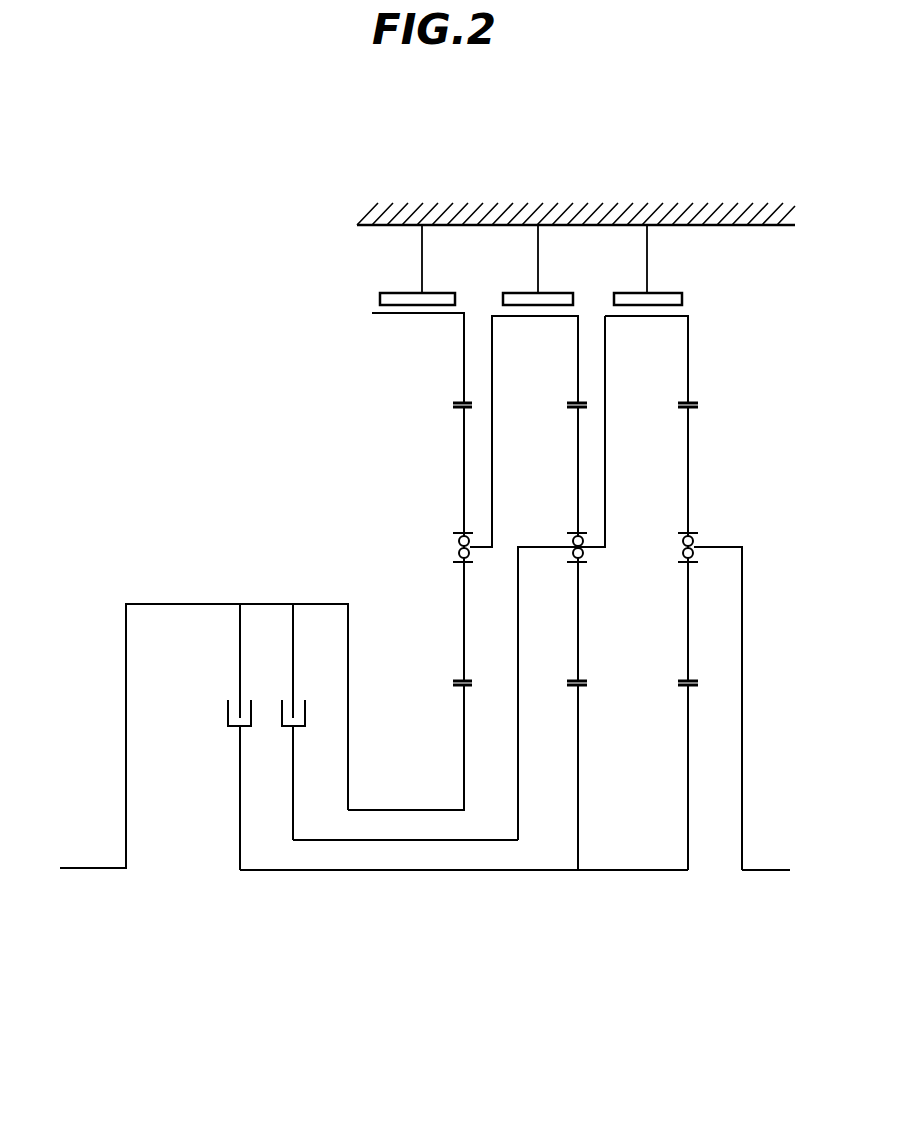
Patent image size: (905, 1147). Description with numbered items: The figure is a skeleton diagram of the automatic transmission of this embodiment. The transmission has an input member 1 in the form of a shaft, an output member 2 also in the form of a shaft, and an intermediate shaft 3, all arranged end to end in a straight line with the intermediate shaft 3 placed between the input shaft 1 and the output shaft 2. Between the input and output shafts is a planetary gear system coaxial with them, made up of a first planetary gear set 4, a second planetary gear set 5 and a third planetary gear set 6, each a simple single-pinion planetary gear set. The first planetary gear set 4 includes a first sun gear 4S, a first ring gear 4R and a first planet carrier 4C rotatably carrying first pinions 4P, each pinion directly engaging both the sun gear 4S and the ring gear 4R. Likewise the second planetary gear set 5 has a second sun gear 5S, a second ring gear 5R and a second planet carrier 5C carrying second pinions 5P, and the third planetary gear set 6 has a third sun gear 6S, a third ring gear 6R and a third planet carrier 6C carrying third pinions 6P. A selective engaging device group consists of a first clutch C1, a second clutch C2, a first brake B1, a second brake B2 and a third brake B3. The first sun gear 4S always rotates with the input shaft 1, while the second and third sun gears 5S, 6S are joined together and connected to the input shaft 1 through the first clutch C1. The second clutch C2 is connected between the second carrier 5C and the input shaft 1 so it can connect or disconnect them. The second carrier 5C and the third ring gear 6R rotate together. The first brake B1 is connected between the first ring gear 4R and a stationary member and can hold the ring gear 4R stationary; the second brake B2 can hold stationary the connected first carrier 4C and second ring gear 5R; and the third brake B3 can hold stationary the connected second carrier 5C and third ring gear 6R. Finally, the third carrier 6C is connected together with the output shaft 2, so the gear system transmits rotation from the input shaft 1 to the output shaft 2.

The input member 1 is at (117, 870).
The output member 2 is at (760, 872).
The intermediate shaft 3 is at (547, 878).
The first planetary gear set 4 is at (423, 561).
The first ring gear 4R is at (464, 370).
The first pinions 4P is at (464, 470).
The first planet carrier 4C is at (482, 552).
The first sun gear 4S is at (463, 735).
The second planetary gear set 5 is at (564, 593).
The second ring gear 5R is at (578, 362).
The second pinions 5P is at (578, 460).
The second planet carrier 5C is at (537, 547).
The second sun gear 5S is at (577, 740).
The third planetary gear set 6 is at (696, 593).
The third ring gear 6R is at (688, 365).
The third pinions 6P is at (688, 472).
The third planet carrier 6C is at (730, 547).
The third sun gear 6S is at (687, 750).
The first brake B1 is at (441, 293).
The second brake B2 is at (560, 293).
The third brake B3 is at (678, 293).
The first clutch C1 is at (233, 727).
The second clutch C2 is at (300, 727).